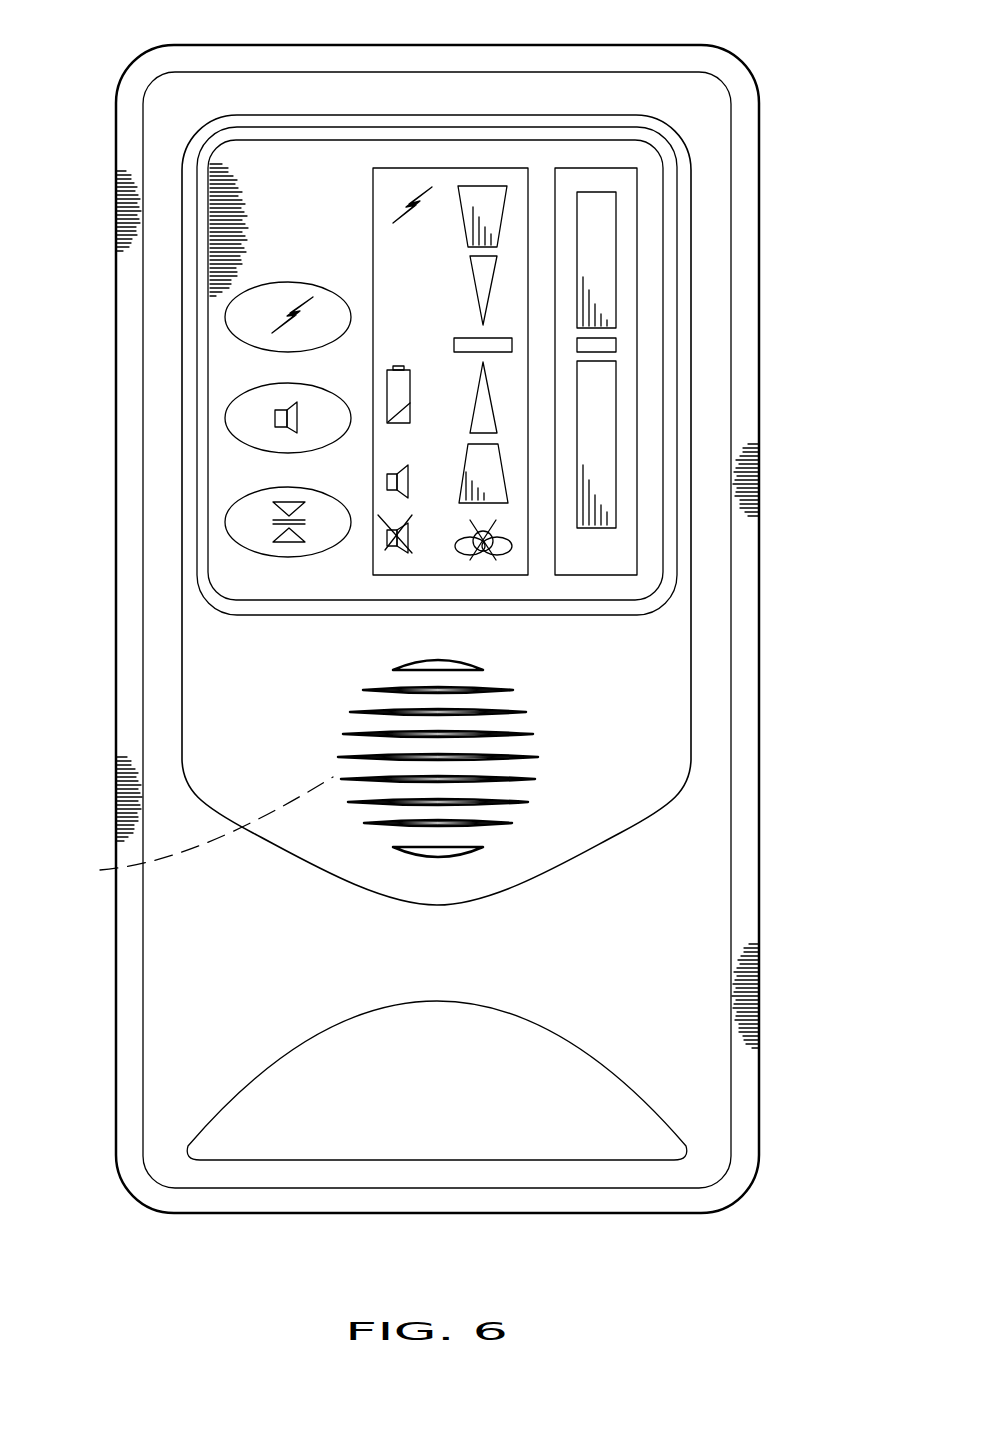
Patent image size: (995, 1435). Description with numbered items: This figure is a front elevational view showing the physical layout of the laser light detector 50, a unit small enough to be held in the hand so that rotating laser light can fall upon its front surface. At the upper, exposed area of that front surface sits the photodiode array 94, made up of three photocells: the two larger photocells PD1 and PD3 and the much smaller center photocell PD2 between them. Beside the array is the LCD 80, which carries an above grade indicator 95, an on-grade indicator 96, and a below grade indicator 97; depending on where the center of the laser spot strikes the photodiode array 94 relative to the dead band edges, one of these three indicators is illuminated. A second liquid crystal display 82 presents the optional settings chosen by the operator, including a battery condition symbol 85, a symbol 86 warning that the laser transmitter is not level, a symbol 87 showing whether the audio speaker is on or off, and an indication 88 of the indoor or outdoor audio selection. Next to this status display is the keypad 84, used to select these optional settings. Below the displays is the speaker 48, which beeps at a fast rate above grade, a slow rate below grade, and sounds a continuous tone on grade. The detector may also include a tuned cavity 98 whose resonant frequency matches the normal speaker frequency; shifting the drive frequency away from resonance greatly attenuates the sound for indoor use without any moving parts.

The laser light detector 50 is at (792, 1060).
The LCD (liquid crystal display) 80 is at (478, 334).
The liquid crystal display 82 is at (352, 337).
The keypad 84 is at (230, 372).
The battery condition symbol 85 is at (397, 368).
The transmitter not level warning symbol 86 is at (508, 553).
The audio speaker on/off symbol 87 is at (387, 482).
The audio attenuation indication 88 is at (414, 186).
The photodiode array 94 is at (694, 293).
The above grade indicator 95 is at (497, 193).
The on-grade indicator 96 is at (474, 338).
The below grade indicator 97 is at (497, 468).
The tuned cavity 98 is at (197, 830).
The speaker 48 is at (523, 712).
The photocell PD1 is at (607, 250).
The center photocell PD2 is at (612, 345).
The photocell PD3 is at (607, 470).